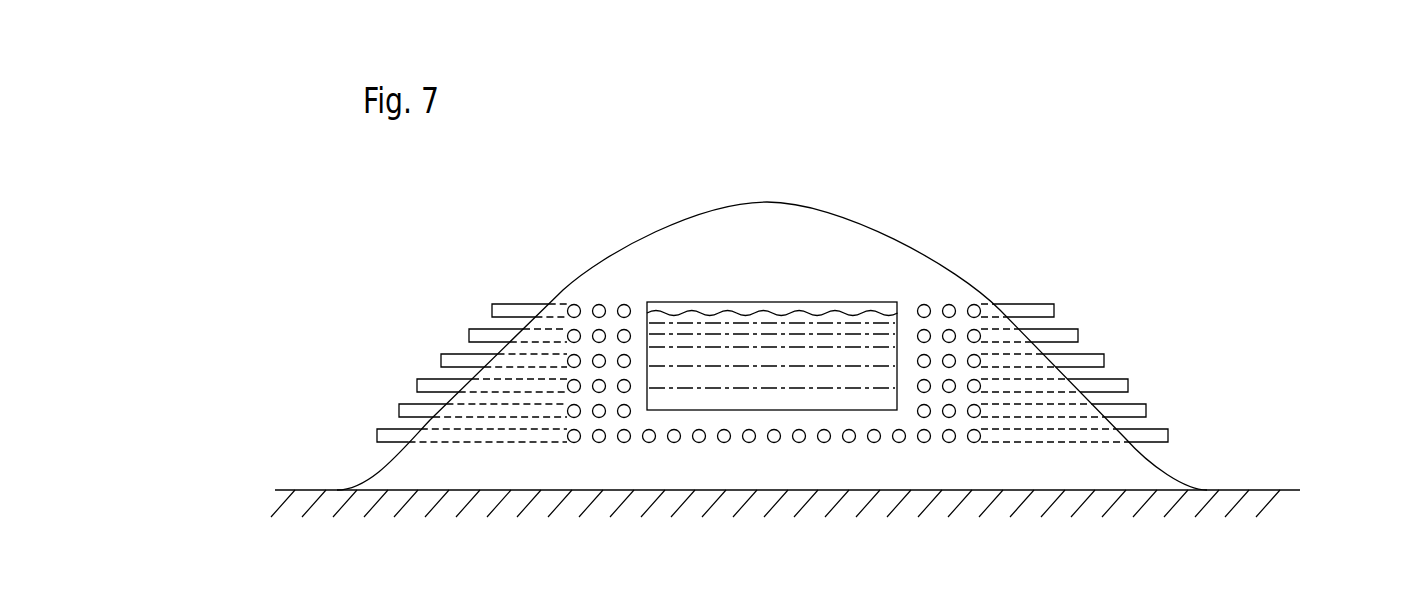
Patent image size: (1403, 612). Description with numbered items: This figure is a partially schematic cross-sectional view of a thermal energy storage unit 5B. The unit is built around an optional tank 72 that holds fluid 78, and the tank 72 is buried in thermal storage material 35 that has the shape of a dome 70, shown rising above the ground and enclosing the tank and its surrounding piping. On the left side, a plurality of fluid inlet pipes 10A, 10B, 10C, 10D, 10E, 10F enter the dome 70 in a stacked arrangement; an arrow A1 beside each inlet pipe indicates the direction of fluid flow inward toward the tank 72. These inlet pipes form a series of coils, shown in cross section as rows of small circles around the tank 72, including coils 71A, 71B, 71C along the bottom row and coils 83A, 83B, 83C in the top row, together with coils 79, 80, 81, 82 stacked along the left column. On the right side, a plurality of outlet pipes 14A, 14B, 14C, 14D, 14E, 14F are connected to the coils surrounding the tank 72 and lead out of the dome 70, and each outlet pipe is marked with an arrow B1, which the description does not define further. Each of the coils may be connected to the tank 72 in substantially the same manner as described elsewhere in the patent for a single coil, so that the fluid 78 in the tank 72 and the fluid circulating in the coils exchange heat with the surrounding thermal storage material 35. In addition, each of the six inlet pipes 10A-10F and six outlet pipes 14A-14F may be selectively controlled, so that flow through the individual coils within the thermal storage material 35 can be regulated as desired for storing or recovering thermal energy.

The thermal energy storage unit 5B is at (992, 200).
The dome 70 is at (728, 202).
The thermal storage material 35 is at (773, 223).
The tank 72 is at (835, 302).
The fluid 78 is at (850, 330).
The coil 82 is at (567, 331).
The coil 83A is at (572, 305).
The coil 83B is at (598, 305).
The coil 83C is at (623, 305).
The coil 81 is at (567, 364).
The coil 80 is at (567, 389).
The coil 79 is at (567, 414).
The coil 71A is at (575, 443).
The coil 71B is at (598, 443).
The coil 71C is at (622, 443).
The fluid inlet pipe 10A is at (377, 430).
The fluid inlet pipe 10B is at (398, 405).
The fluid inlet pipe 10C is at (417, 380).
The fluid inlet pipe 10D is at (440, 354).
The fluid inlet pipe 10E is at (468, 330).
The fluid inlet pipe 10F is at (491, 304).
The outlet pipe 14A is at (1168, 432).
The outlet pipe 14B is at (1147, 403).
The outlet pipe 14C is at (1130, 378).
The outlet pipe 14D is at (1104, 354).
The outlet pipe 14E is at (1078, 330).
The outlet pipe 14F is at (1055, 304).
The arrow A1 is at (483, 311).
The second direction B1 is at (1062, 311).